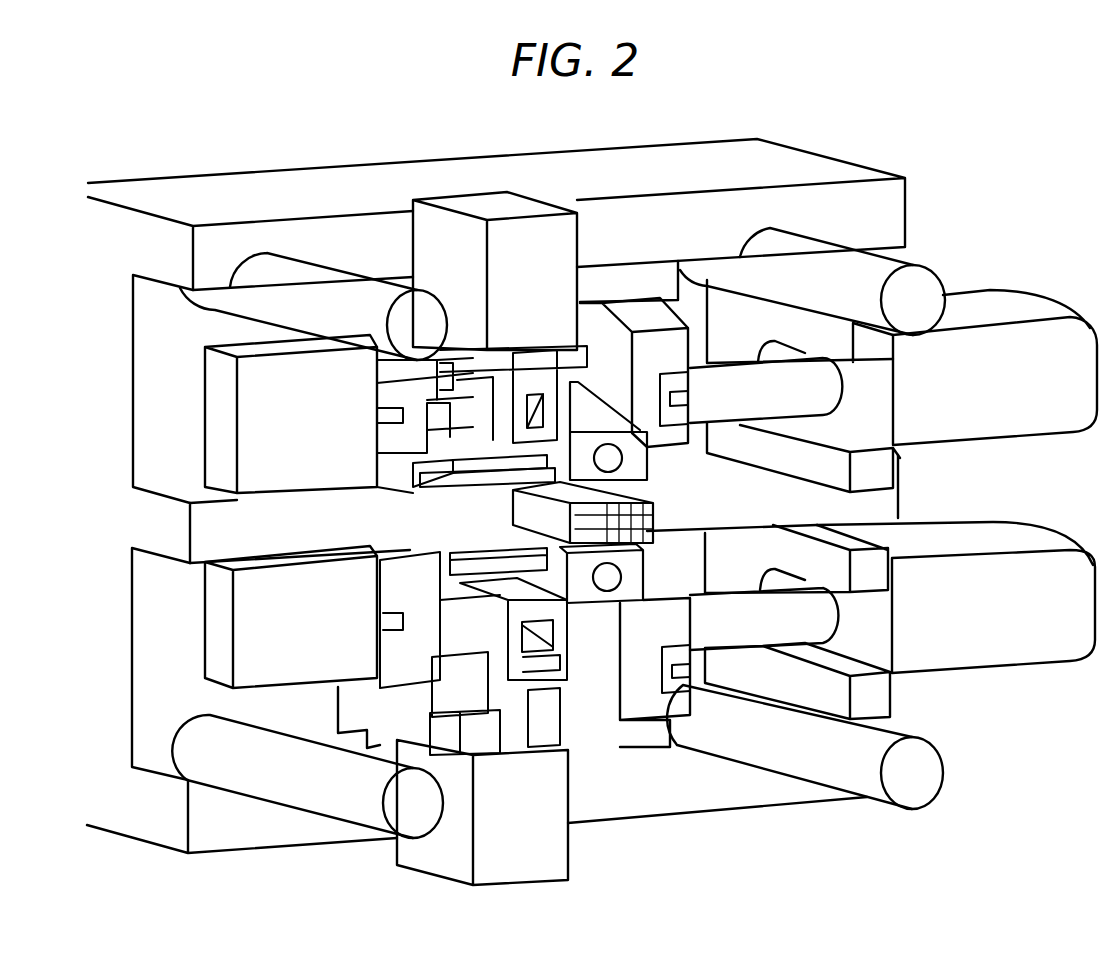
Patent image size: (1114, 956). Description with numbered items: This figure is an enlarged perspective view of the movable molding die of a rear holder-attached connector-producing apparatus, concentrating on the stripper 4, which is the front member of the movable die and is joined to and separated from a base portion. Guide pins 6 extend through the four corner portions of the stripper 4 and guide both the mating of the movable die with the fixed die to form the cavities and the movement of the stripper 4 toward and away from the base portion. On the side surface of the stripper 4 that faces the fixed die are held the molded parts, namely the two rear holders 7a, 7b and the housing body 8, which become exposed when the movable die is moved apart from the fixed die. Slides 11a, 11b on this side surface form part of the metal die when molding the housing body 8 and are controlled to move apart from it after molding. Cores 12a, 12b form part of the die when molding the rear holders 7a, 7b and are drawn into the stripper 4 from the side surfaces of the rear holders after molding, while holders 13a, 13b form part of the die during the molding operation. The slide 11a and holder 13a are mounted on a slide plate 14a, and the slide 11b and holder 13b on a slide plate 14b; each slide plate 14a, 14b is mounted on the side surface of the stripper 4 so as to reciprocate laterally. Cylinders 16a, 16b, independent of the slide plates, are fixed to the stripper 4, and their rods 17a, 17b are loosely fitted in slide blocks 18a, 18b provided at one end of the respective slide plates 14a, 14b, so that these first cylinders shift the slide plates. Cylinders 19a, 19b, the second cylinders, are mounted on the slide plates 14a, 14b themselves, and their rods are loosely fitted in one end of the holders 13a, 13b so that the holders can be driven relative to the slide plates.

The stripper 4 is at (840, 172).
The guide pins 6 is at (330, 298).
The rear holder 7a is at (377, 478).
The rear holder 7b is at (417, 580).
The housing body 8 is at (650, 515).
The slide 11a is at (583, 460).
The slide 11b is at (640, 575).
The core 12a is at (493, 477).
The core 12b is at (498, 560).
The holder 13a is at (522, 397).
The holder 13b is at (520, 700).
The slide plate 14a is at (220, 427).
The slide plate 14b is at (217, 630).
The cylinder 16a is at (995, 367).
The cylinder 16b is at (956, 597).
The rod 17a is at (766, 382).
The rod 17b is at (764, 609).
The slide block 18a is at (660, 348).
The slide block 18b is at (667, 707).
The cylinder 19a is at (560, 250).
The cylinder 19b is at (557, 860).